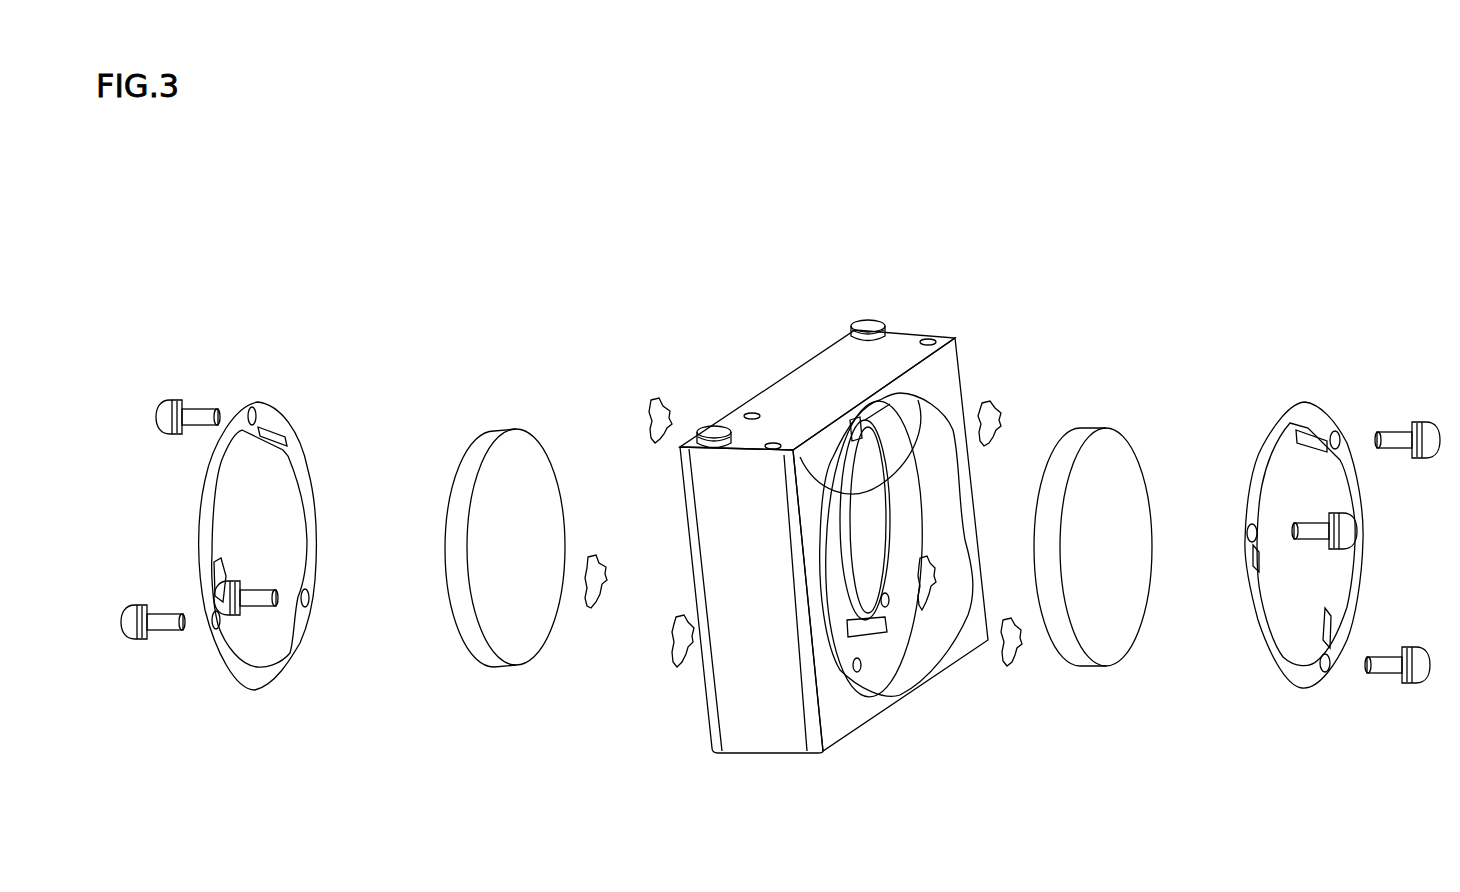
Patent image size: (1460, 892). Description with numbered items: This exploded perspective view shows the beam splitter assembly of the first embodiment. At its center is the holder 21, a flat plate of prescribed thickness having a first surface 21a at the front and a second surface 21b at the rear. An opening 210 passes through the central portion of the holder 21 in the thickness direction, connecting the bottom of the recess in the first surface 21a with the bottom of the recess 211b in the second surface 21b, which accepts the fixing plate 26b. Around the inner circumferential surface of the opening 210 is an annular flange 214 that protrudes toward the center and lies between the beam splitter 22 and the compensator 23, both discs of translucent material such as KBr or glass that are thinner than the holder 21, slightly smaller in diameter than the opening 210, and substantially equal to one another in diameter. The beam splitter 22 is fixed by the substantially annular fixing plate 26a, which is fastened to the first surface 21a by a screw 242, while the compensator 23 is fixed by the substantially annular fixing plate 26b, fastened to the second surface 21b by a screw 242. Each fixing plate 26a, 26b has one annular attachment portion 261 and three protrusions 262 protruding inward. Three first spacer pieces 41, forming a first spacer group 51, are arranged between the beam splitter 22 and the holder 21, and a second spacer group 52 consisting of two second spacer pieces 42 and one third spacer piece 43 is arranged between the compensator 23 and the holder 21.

The holder 21 is at (831, 544).
The first surface 21a is at (742, 715).
The second surface 21b is at (890, 544).
The recess 211b is at (935, 655).
The opening 210 is at (920, 410).
The flange 214 is at (798, 455).
The beam splitter 22 is at (487, 438).
The compensator 23 is at (1077, 438).
The fixing plate 26a is at (313, 483).
The fixing plate 26b is at (1333, 412).
The attachment portion 261 is at (250, 680).
The protrusion 262 is at (272, 432).
The screw 242 is at (122, 638).
The first spacer piece 41 is at (596, 560).
The second spacer piece 42 is at (930, 560).
The third spacer piece 43 is at (1017, 621).
The first spacer group 51 is at (683, 353).
The second spacer group 52 is at (1084, 286).